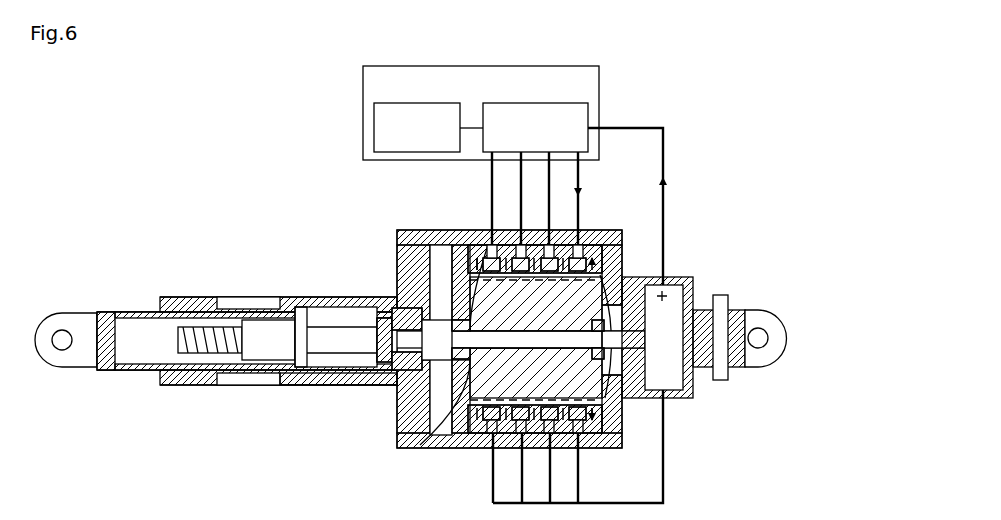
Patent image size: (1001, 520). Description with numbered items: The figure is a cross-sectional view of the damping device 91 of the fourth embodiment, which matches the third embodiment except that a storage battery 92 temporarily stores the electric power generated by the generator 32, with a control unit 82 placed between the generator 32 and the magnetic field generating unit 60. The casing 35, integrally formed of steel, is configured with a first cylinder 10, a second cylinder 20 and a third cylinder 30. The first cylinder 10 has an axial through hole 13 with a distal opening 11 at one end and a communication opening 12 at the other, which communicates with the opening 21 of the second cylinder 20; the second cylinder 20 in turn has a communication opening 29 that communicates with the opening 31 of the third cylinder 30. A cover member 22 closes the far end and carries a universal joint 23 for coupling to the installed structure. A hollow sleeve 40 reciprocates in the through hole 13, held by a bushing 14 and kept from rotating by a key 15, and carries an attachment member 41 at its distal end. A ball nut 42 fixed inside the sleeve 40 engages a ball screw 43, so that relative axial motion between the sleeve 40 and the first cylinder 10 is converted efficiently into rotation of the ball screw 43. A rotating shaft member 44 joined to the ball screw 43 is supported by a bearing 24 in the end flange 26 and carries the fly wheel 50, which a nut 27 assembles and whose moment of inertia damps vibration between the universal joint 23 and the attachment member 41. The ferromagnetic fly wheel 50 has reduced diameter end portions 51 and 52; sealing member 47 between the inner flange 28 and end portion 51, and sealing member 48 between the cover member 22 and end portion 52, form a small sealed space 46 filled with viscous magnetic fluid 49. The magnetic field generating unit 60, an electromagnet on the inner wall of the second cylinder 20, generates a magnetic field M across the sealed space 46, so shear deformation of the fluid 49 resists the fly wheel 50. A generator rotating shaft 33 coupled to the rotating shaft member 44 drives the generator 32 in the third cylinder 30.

The first cylinder 10 is at (222, 292).
The distal opening 11 is at (148, 310).
The communication opening 12 is at (364, 375).
The axial through hole 13 is at (322, 307).
The bushing 14 is at (184, 305).
The key 15 is at (306, 385).
The second cylinder 20 is at (532, 240).
The opening 21 is at (440, 245).
The cover member 22 is at (624, 232).
The universal joint 23 is at (769, 314).
The bearing 24 is at (398, 387).
The end flange 26 is at (397, 258).
The nut 27 is at (397, 438).
The inner flange 28 is at (461, 245).
The communication opening 29 is at (595, 355).
The third cylinder 30 is at (684, 272).
The opening 31 is at (640, 398).
The generator 32 is at (686, 380).
The generator rotating shaft 33 is at (636, 331).
The casing 35 is at (404, 218).
The sleeve 40 is at (138, 380).
The attachment member 41 is at (64, 320).
The ball nut 42 is at (270, 320).
The ball screw 43 is at (332, 327).
The rotating shaft member 44 is at (606, 262).
The sealed space 46 is at (598, 248).
The sealing member 47 is at (428, 448).
The sealing member 48 is at (612, 282).
The viscous magnetic fluid 49 is at (534, 339).
The fly wheel 50 is at (610, 415).
The reduced diameter end portion 51 is at (480, 433).
The reduced diameter end portion 52 is at (606, 398).
The magnetic field generating unit 60 is at (562, 245).
The control unit 82 is at (570, 103).
The damping device 91 is at (708, 200).
The storage battery 92 is at (448, 103).
The magnetic field M is at (588, 222).